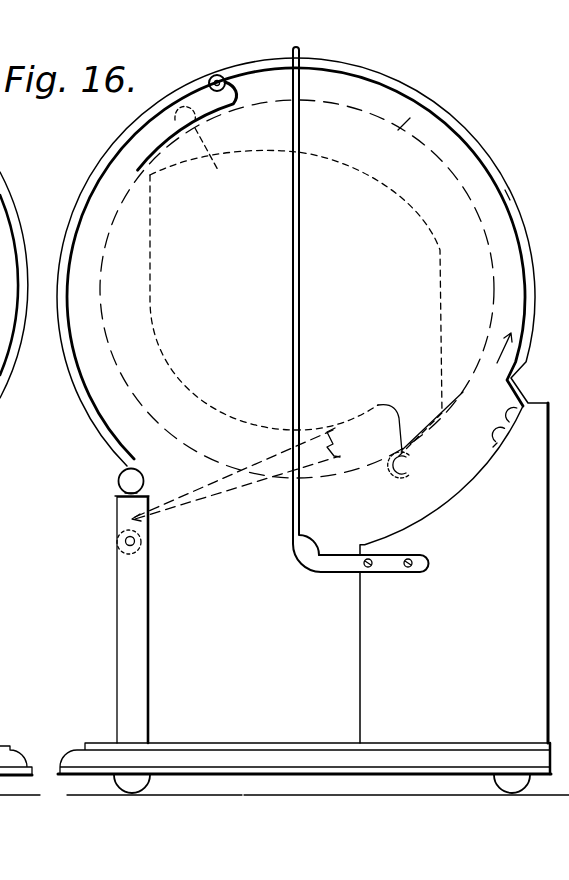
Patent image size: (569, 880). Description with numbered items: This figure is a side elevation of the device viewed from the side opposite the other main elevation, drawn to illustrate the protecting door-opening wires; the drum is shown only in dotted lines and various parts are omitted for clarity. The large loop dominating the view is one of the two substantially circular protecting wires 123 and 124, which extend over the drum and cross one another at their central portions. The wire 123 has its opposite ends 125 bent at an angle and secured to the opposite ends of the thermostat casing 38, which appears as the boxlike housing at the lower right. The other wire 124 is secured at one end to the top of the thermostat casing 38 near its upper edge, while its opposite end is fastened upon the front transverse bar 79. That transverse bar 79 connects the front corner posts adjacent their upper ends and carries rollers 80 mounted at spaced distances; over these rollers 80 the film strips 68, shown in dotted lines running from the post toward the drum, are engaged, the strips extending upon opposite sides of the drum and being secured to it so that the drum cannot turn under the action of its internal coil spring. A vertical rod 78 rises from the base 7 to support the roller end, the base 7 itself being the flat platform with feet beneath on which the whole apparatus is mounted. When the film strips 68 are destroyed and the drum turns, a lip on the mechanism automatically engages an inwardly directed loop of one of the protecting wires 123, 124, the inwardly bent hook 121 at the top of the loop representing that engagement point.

The base 7 is at (242, 753).
The thermostat casing 38 is at (454, 573).
The film strips 68 is at (208, 498).
The post 78 is at (123, 624).
The front transverse bar 79 is at (124, 546).
The rollers 80 is at (117, 531).
The latch 121 is at (193, 168).
The protecting wire 123 is at (280, 349).
The protecting wire 124 is at (84, 197).
The ends of wire 123 125 is at (346, 573).